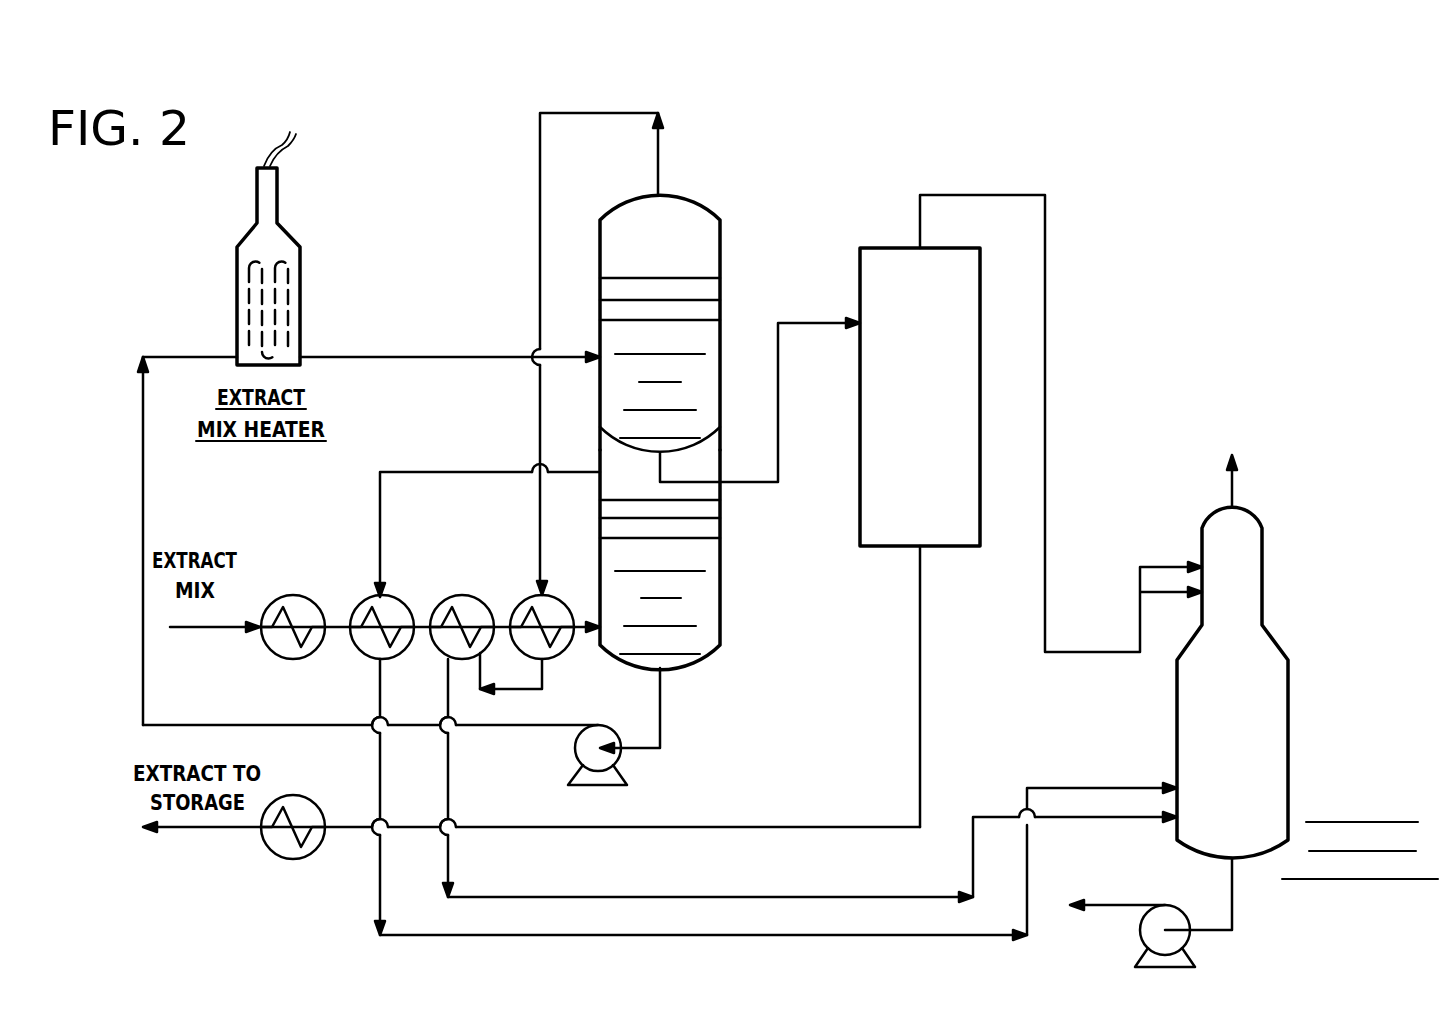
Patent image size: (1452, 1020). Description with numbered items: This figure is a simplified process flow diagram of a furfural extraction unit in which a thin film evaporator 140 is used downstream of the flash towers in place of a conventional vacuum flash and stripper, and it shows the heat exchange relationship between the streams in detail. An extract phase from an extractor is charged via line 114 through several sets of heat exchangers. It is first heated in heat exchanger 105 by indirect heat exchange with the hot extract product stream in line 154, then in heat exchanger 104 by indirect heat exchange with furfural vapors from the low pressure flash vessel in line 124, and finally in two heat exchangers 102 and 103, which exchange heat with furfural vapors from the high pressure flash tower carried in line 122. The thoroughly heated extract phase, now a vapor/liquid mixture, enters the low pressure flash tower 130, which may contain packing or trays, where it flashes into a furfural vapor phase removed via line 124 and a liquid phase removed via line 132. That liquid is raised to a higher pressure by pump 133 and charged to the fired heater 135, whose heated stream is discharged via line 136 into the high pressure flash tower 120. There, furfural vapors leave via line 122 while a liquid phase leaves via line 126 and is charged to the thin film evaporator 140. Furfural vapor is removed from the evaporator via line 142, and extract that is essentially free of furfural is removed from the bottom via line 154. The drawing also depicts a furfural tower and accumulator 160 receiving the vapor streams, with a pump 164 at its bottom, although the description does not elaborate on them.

The heat exchanger 102 is at (558, 655).
The heat exchanger 103 is at (468, 596).
The heat exchanger 104 is at (393, 596).
The heat exchanger 105 is at (295, 595).
The line 114 is at (195, 630).
The high pressure flash tower 120 is at (722, 236).
The line 122 is at (538, 162).
The line 124 is at (440, 472).
The line 126 is at (810, 322).
The low pressure flash tower 130 is at (722, 608).
The line 132 is at (662, 700).
The pump 133 is at (575, 745).
The fired heater 135 is at (300, 276).
The line 136 is at (383, 358).
The thin film evaporator 140 is at (981, 403).
The line 142 is at (958, 195).
The line 154 is at (512, 828).
The furfural tower and accumulator 160 is at (1290, 722).
The pump 164 is at (1127, 905).